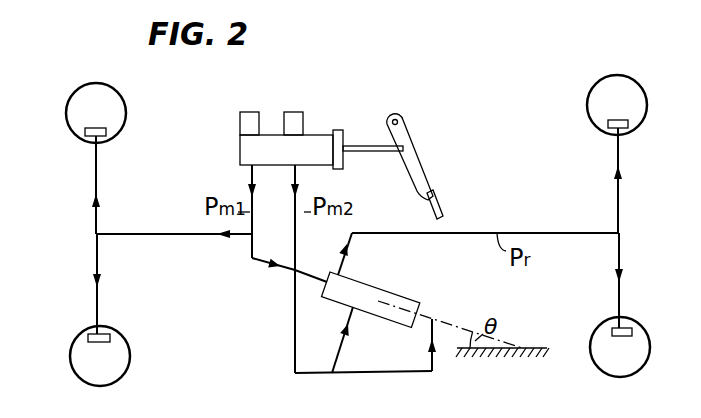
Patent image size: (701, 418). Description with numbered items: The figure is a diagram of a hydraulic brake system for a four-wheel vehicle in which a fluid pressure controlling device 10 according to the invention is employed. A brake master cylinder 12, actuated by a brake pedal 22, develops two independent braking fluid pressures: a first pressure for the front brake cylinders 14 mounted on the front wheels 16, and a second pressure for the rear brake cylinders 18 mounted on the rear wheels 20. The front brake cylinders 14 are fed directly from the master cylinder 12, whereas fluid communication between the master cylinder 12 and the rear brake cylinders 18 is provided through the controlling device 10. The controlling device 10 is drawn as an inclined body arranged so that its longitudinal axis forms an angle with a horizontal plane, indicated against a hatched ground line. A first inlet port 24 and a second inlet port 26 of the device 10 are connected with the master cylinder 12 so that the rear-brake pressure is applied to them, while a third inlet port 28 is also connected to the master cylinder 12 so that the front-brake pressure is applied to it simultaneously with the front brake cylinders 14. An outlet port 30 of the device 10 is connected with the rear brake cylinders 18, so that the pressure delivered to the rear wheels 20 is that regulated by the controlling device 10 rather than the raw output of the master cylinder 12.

The fluid pressure controlling device 10 is at (405, 297).
The brake master cylinder 12 is at (242, 148).
The front brake cylinders 14 is at (104, 137).
The front wheels 16 is at (67, 104).
The rear brake cylinders 18 is at (604, 130).
The rear wheels 20 is at (590, 100).
The brake pedal 22 is at (412, 158).
The first inlet port 24 is at (355, 314).
The second inlet port 26 is at (420, 312).
The third inlet port 28 is at (330, 258).
The outlet port 30 is at (340, 276).